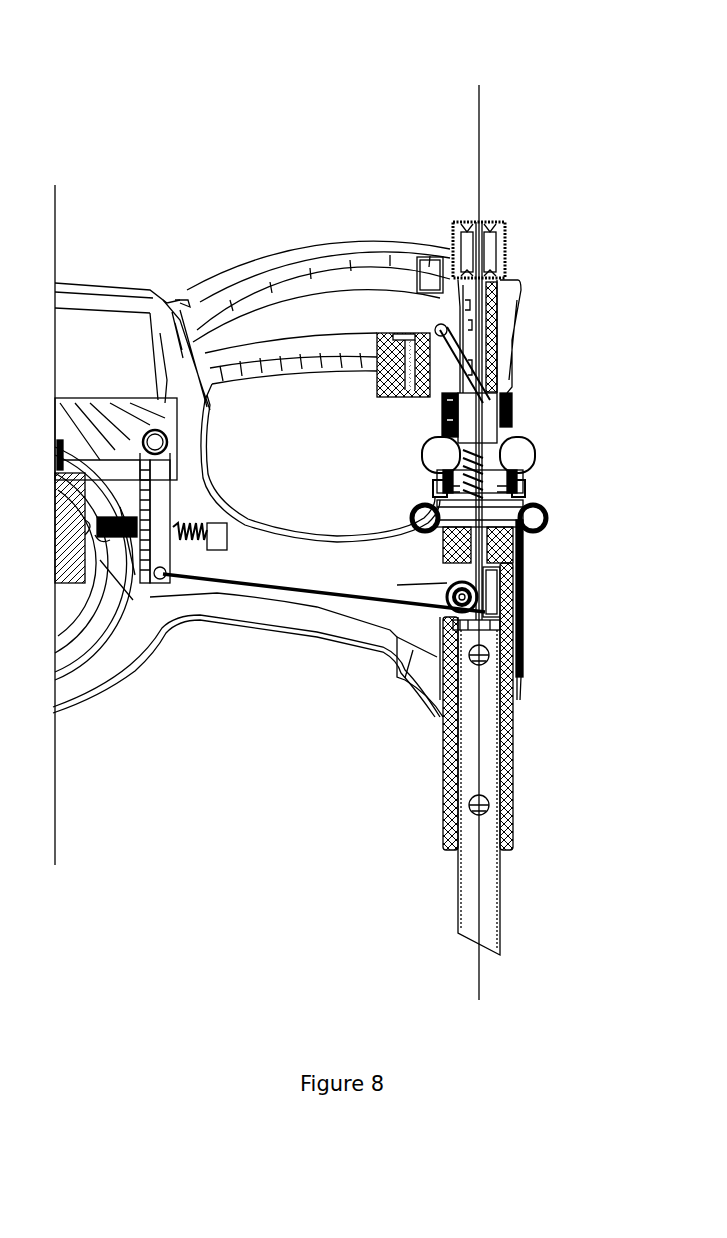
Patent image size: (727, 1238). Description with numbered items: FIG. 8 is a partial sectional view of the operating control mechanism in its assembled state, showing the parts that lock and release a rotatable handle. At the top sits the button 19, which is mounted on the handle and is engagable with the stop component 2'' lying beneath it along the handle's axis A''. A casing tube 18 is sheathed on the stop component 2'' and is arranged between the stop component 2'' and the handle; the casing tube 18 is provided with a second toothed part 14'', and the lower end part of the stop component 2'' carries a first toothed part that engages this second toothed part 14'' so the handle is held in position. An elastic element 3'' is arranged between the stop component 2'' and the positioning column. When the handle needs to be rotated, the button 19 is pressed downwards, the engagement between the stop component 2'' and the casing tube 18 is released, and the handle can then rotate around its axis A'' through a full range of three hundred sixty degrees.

The axis A'' is at (561, 511).
The button 19 is at (502, 222).
The stop component 2'' is at (558, 338).
The casing tube 18 is at (510, 410).
The second toothed part 14'' is at (549, 432).
The elastic element 3'' is at (545, 456).